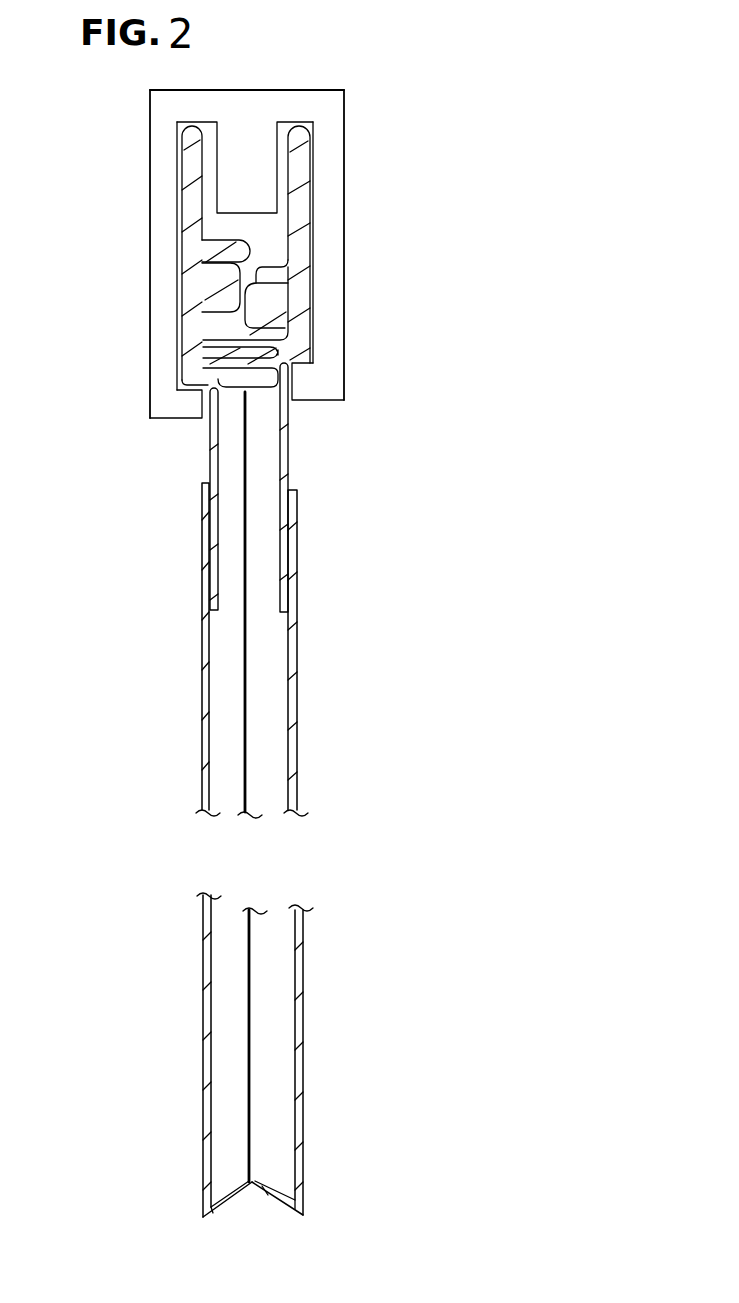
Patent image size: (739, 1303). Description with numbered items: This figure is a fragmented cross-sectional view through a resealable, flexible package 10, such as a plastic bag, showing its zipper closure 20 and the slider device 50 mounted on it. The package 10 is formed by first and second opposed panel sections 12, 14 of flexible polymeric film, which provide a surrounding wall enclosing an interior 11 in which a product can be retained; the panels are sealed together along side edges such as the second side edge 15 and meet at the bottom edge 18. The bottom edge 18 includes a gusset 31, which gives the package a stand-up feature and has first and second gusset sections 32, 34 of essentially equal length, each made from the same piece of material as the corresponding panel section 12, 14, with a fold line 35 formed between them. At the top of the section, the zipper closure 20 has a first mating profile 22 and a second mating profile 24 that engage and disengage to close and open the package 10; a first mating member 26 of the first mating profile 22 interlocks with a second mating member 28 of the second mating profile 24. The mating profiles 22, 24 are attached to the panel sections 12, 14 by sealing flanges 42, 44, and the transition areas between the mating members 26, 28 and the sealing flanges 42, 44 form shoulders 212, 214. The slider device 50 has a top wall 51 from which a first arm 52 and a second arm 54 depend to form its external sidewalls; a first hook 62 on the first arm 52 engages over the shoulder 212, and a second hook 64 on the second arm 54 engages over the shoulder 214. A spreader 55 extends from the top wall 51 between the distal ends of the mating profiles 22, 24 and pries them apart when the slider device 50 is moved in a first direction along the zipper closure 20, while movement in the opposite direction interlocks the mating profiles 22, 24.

The flexible package 10 is at (447, 426).
The interior 11 is at (303, 1009).
The first panel section 12 is at (200, 718).
The second panel section 14 is at (300, 722).
The second side edge 15 is at (247, 995).
The bottom edge 18 is at (210, 1210).
The zipper closure 20 is at (305, 273).
The first mating profile 22 is at (183, 210).
The second mating profile 24 is at (300, 243).
The first mating member 26 is at (193, 322).
The second mating member 28 is at (300, 316).
The gusset 31 is at (252, 1182).
The first gusset section 32 is at (228, 1207).
The second gusset section 34 is at (278, 1203).
The fold line 35 is at (252, 1182).
The sealing flange 42 is at (208, 462).
The sealing flange 44 is at (288, 470).
The slider device 50 is at (345, 162).
The top wall 51 is at (235, 90).
The first arm 52 is at (148, 372).
The second arm 54 is at (343, 330).
The spreader 55 is at (200, 173).
The first hook 62 is at (176, 422).
The second hook 64 is at (317, 400).
The shoulder 212 is at (202, 393).
The shoulder 214 is at (300, 368).